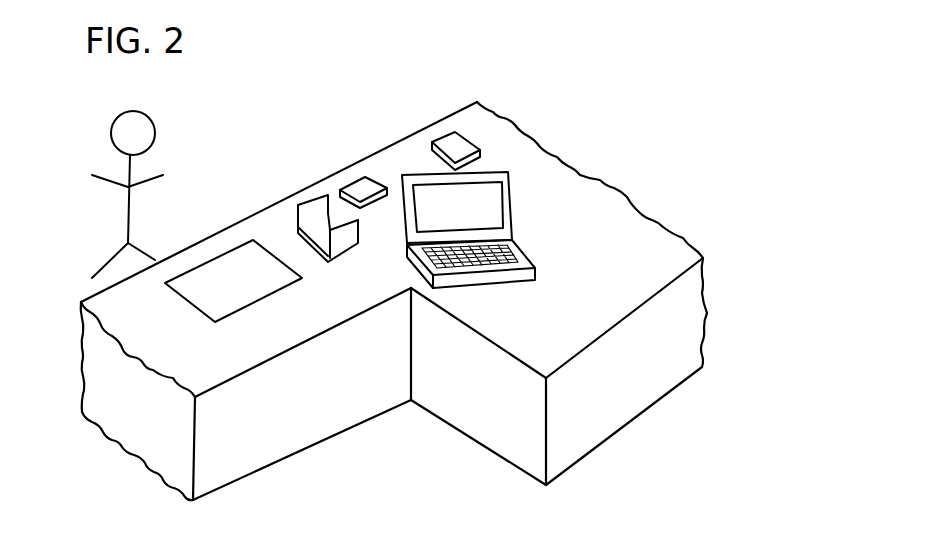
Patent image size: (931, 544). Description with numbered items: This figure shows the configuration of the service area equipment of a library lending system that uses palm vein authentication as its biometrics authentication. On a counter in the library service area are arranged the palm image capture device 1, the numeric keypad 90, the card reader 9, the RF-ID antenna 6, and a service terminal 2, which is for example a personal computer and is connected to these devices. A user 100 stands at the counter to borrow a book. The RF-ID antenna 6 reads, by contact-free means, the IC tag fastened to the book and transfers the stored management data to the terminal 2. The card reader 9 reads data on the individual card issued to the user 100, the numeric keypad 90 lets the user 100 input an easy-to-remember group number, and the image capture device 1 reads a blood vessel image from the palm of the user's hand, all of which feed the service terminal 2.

The user 100 is at (118, 142).
The RF-ID antenna 6 is at (232, 263).
The palm image capture device 1 is at (313, 203).
The numeric keypad 90 is at (367, 177).
The card reader 9 is at (460, 142).
The service terminal 2 is at (507, 197).